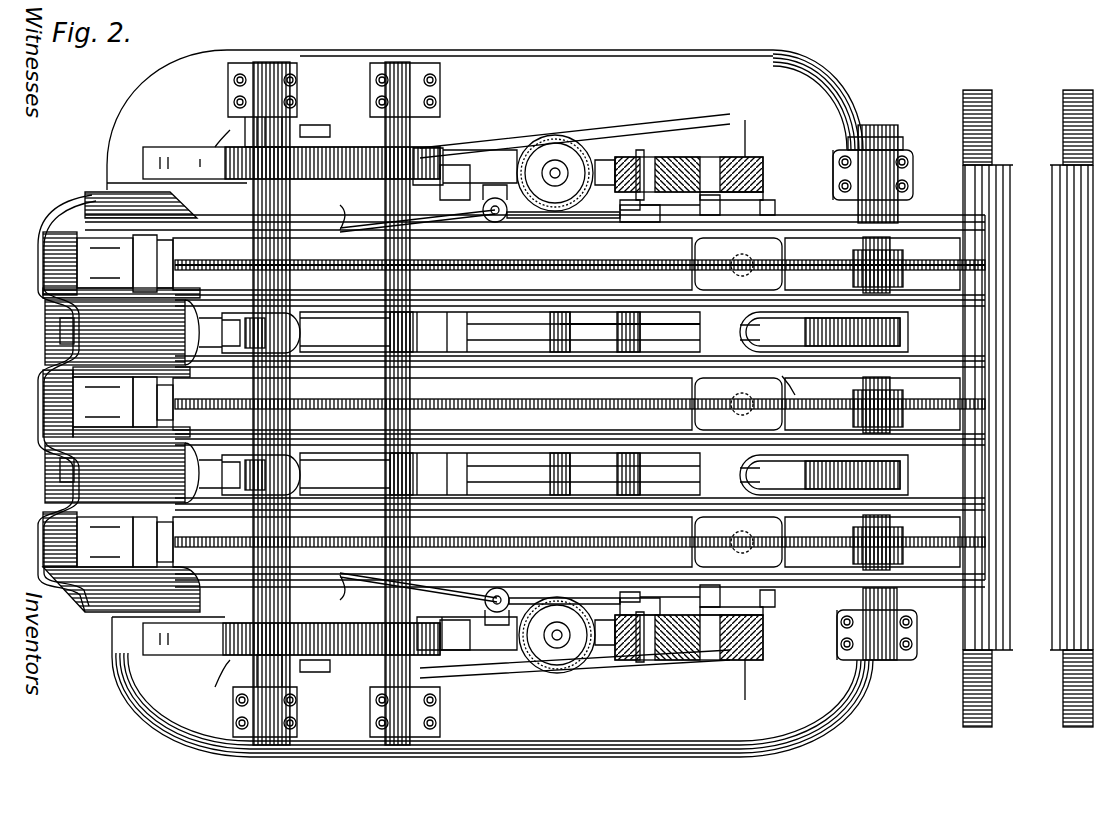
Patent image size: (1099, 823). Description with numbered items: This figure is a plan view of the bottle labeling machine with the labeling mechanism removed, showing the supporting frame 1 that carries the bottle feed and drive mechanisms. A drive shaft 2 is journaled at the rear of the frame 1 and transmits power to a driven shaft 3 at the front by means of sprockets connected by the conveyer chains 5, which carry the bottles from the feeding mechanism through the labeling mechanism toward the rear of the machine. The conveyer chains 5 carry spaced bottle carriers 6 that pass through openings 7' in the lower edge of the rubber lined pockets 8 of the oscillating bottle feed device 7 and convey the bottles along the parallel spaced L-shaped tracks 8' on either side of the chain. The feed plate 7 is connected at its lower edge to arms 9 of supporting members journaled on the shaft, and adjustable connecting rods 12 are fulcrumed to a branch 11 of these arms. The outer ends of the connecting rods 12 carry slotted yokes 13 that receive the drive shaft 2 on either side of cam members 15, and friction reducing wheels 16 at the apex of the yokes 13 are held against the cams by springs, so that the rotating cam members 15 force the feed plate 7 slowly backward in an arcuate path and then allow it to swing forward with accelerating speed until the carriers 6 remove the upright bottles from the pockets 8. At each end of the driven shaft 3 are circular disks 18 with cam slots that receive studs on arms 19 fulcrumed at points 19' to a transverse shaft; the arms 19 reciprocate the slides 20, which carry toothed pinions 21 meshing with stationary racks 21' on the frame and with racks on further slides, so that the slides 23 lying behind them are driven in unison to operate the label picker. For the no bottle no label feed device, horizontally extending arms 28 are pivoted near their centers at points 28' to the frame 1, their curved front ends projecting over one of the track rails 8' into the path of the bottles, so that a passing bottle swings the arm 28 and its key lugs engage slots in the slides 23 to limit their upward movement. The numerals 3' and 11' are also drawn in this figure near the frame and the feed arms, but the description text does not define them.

The supporting frame 1 is at (503, 643).
The drive shaft 2 is at (873, 140).
The driven shaft 3 is at (86, 268).
The casing bar 3' is at (634, 504).
The conveyer chains 5 is at (580, 390).
The bottle carriers 6 is at (43, 380).
The oscillating bottle feed device 7 is at (111, 332).
The openings 7' is at (100, 482).
The pockets 8 is at (213, 404).
The L-shaped tracks 8' is at (630, 360).
The arms 9 is at (60, 338).
The branch 11 is at (413, 553).
The piston rod head 11' is at (249, 493).
The connecting rods 12 is at (637, 332).
The yokes 13 is at (900, 350).
The cam members 15 is at (910, 483).
The friction reducing wheels 16 is at (795, 397).
The circular disks 18 is at (143, 160).
The arms 19 is at (479, 400).
The fulcrum points 19' is at (386, 399).
The slides 20 is at (767, 157).
The toothed pinions 21 is at (747, 403).
The stationary racks 21' is at (788, 418).
The slides 23 is at (742, 142).
The horizontally extending arms 28 is at (512, 407).
The pivot points 28' is at (500, 405).